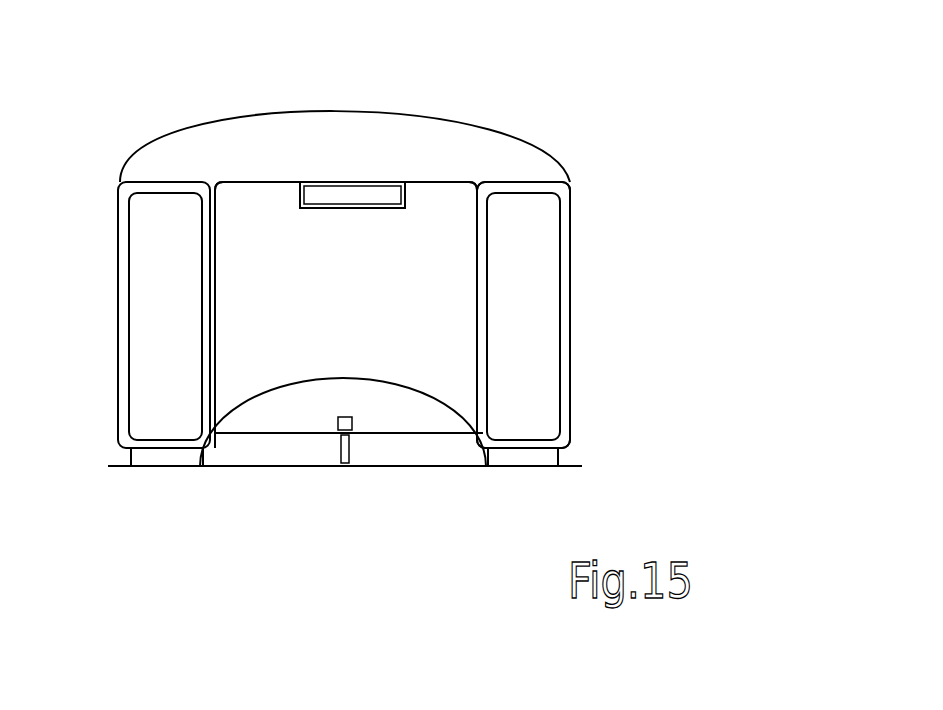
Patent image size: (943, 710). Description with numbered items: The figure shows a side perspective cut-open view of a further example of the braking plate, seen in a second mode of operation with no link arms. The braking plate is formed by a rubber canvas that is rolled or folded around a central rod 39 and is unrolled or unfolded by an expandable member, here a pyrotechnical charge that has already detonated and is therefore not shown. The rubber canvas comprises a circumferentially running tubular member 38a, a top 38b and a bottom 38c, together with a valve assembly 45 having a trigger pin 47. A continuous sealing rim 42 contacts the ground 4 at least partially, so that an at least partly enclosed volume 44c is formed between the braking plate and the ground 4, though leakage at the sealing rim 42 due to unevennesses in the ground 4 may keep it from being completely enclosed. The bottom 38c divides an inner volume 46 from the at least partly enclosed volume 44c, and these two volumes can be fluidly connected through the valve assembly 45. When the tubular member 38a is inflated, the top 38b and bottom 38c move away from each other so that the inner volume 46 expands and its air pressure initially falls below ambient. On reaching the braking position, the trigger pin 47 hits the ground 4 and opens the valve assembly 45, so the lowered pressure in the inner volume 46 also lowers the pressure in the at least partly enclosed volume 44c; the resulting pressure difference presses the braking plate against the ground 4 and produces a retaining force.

The central rod 39 is at (353, 193).
The top 38b is at (538, 172).
The circumferentially running tubular member 38a is at (533, 293).
The inner volume 46 is at (283, 293).
The bottom 38c is at (368, 400).
The valve assembly 45 is at (355, 424).
The trigger pin 47 is at (352, 447).
The sealing rim 42 is at (177, 457).
The at least partly enclosed volume 44c is at (238, 450).
The ground 4 is at (435, 470).